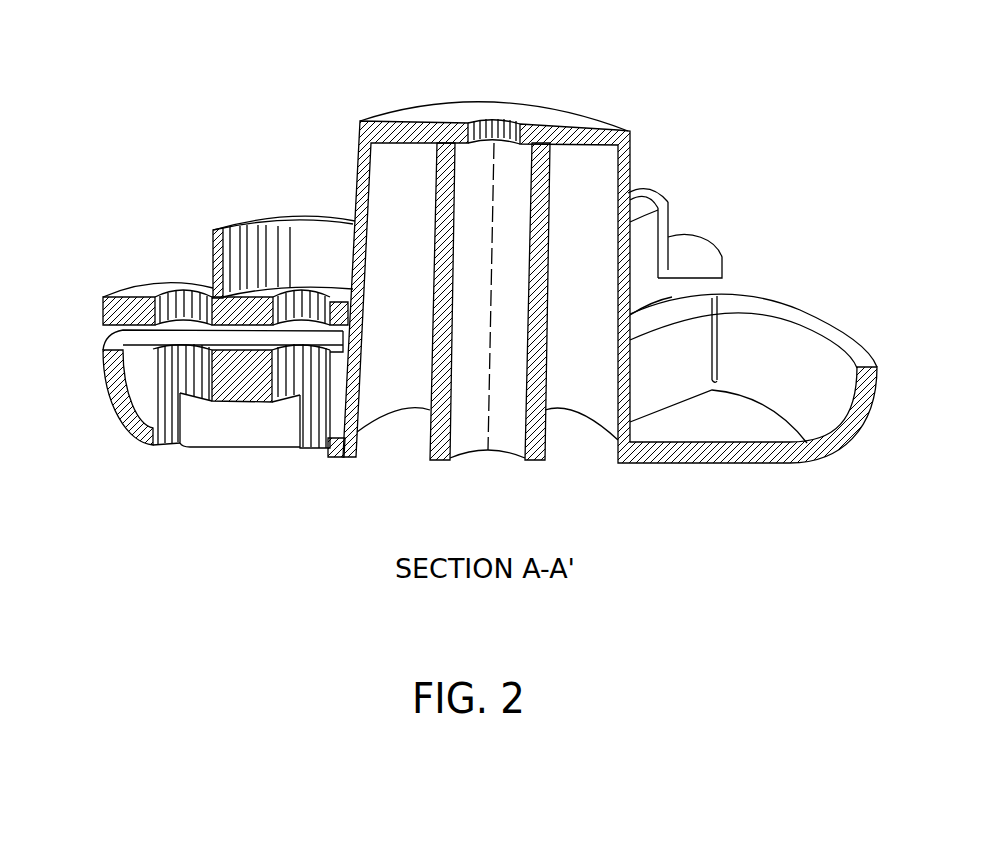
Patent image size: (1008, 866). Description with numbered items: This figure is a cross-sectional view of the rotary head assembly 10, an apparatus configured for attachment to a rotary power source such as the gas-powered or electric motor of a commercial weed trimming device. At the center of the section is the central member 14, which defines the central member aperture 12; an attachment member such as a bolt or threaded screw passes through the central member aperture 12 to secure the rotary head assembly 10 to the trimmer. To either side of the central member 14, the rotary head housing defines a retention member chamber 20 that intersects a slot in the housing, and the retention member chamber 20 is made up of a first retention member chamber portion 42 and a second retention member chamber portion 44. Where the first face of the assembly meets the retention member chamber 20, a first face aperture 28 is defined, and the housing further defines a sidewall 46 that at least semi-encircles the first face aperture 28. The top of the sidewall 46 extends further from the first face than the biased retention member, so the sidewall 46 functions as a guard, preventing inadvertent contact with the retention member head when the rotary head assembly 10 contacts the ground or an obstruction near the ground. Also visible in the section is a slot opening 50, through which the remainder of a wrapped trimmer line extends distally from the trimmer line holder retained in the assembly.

The rotary head assembly 10 is at (718, 293).
The central member aperture 12 is at (495, 127).
The central member 14 is at (608, 120).
The retention member chamber 20 is at (292, 460).
The first face aperture 28 is at (300, 290).
The first retention member chamber portion 42 is at (317, 450).
The second retention member chamber portion 44 is at (165, 445).
The sidewall 46 is at (312, 219).
The slot opening 50 is at (84, 341).